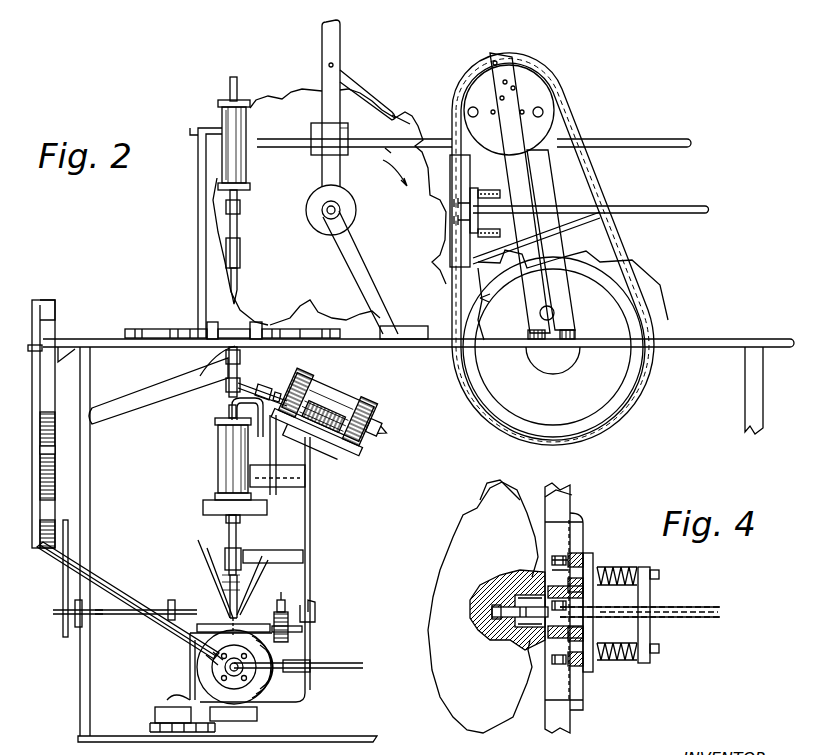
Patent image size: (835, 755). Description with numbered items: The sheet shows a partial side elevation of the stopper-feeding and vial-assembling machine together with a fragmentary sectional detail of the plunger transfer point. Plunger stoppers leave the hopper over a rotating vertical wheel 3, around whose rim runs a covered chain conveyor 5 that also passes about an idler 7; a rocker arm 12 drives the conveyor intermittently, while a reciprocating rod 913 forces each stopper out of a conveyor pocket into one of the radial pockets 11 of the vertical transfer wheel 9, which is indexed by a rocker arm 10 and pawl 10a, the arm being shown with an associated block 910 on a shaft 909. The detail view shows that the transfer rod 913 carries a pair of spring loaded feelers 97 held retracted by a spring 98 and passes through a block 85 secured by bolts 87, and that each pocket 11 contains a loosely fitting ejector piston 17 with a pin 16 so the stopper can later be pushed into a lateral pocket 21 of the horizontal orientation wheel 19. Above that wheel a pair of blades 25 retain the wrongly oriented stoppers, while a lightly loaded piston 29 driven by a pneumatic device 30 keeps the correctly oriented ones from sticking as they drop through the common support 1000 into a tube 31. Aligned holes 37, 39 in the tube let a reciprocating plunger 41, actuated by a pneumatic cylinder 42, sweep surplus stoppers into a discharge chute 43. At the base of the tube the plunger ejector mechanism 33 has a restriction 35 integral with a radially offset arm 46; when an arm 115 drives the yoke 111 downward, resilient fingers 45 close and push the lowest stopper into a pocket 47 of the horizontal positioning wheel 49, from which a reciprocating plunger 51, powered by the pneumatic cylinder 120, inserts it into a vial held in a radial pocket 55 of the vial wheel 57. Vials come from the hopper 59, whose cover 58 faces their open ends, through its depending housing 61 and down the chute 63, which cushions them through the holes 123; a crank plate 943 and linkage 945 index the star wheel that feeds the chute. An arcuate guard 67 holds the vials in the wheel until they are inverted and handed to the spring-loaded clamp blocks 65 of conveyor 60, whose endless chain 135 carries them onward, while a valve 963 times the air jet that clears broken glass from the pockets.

In FIG. 2, the vertical wheel 3 is at (593, 315).
In FIG. 2, the chain conveyor 5 is at (598, 185).
In FIG. 4, the chain conveyor 5 is at (563, 506).
In FIG. 2, the idler 7 is at (530, 88).
In FIG. 2, the vertical transfer wheel 9 is at (392, 128).
In FIG. 4, the vertical transfer wheel 9 is at (458, 548).
In FIG. 2, the rocker arm 10 is at (332, 48).
In FIG. 2, the pawl 10a is at (355, 86).
In FIG. 4, the radial pockets 11 is at (518, 622).
In FIG. 2, the rocker arm 12 is at (535, 240).
In FIG. 4, the pin 16 is at (492, 622).
In FIG. 4, the ejector piston 17 is at (506, 606).
In FIG. 2, the horizontal orientation wheel 19 is at (150, 328).
In FIG. 2, the lateral pockets 21 is at (322, 330).
In FIG. 2, the blades 25 is at (225, 323).
In FIG. 2, the reciprocating piston 29 is at (235, 308).
In FIG. 2, the pneumatic device 30 is at (246, 160).
In FIG. 2, the tube 31 is at (238, 362).
In FIG. 2, the plunger ejector mechanism 33 is at (210, 584).
In FIG. 2, the restriction 35 is at (240, 610).
In FIG. 2, the overflow hole 37 is at (247, 368).
In FIG. 2, the overflow hole 39 is at (227, 368).
In FIG. 2, the reciprocating plunger 41 is at (250, 380).
In FIG. 2, the pneumatic cylinder 42 is at (372, 432).
In FIG. 2, the discharge chute 43 is at (147, 403).
In FIG. 2, the resilient fingers 45 is at (243, 557).
In FIG. 2, the radially offset arm 46 is at (164, 609).
In FIG. 2, the pockets 47 is at (230, 618).
In FIG. 2, the horizontal plunger positioning wheel 49 is at (258, 627).
In FIG. 2, the reciprocating plunger 51 is at (243, 600).
In FIG. 2, the radial pockets 55 is at (300, 625).
In FIG. 2, the vial supporting wheel 57 is at (203, 662).
In FIG. 2, the removable cover member 58 is at (35, 300).
In FIG. 2, the vial hopper 59 is at (47, 318).
In FIG. 2, the conveyor 60 is at (141, 686).
In FIG. 2, the depending housing 61 is at (50, 512).
In FIG. 2, the chute 63 is at (113, 598).
In FIG. 2, the clamp blocks 65 is at (167, 703).
In FIG. 2, the arcuate guard 67 is at (258, 682).
In FIG. 2, the block 85 is at (458, 178).
In FIG. 4, the block 85 is at (552, 660).
In FIG. 2, the bolt 87 is at (455, 219).
In FIG. 4, the bolt 87 is at (571, 555).
In FIG. 2, the spring loaded feelers 97 is at (490, 232).
In FIG. 4, the spring loaded feelers 97 is at (656, 574).
In FIG. 4, the spring 98 is at (600, 568).
In FIG. 2, the yoke 111 is at (207, 545).
In FIG. 2, the arm 115 is at (203, 502).
In FIG. 2, the pneumatic cylinder 120 is at (218, 452).
In FIG. 2, the holes 123 is at (207, 657).
In FIG. 2, the endless chain 135 is at (150, 727).
In FIG. 2, the shaft 909 is at (640, 142).
In FIG. 2, the block 910 is at (348, 128).
In FIG. 2, the reciprocating rod 913 is at (640, 210).
In FIG. 4, the reciprocating rod 913 is at (665, 612).
In FIG. 2, the crank plate 943 is at (62, 623).
In FIG. 2, the linkage 945 is at (72, 532).
In FIG. 2, the valve 963 is at (300, 660).
In FIG. 2, the common support 1000 is at (705, 344).